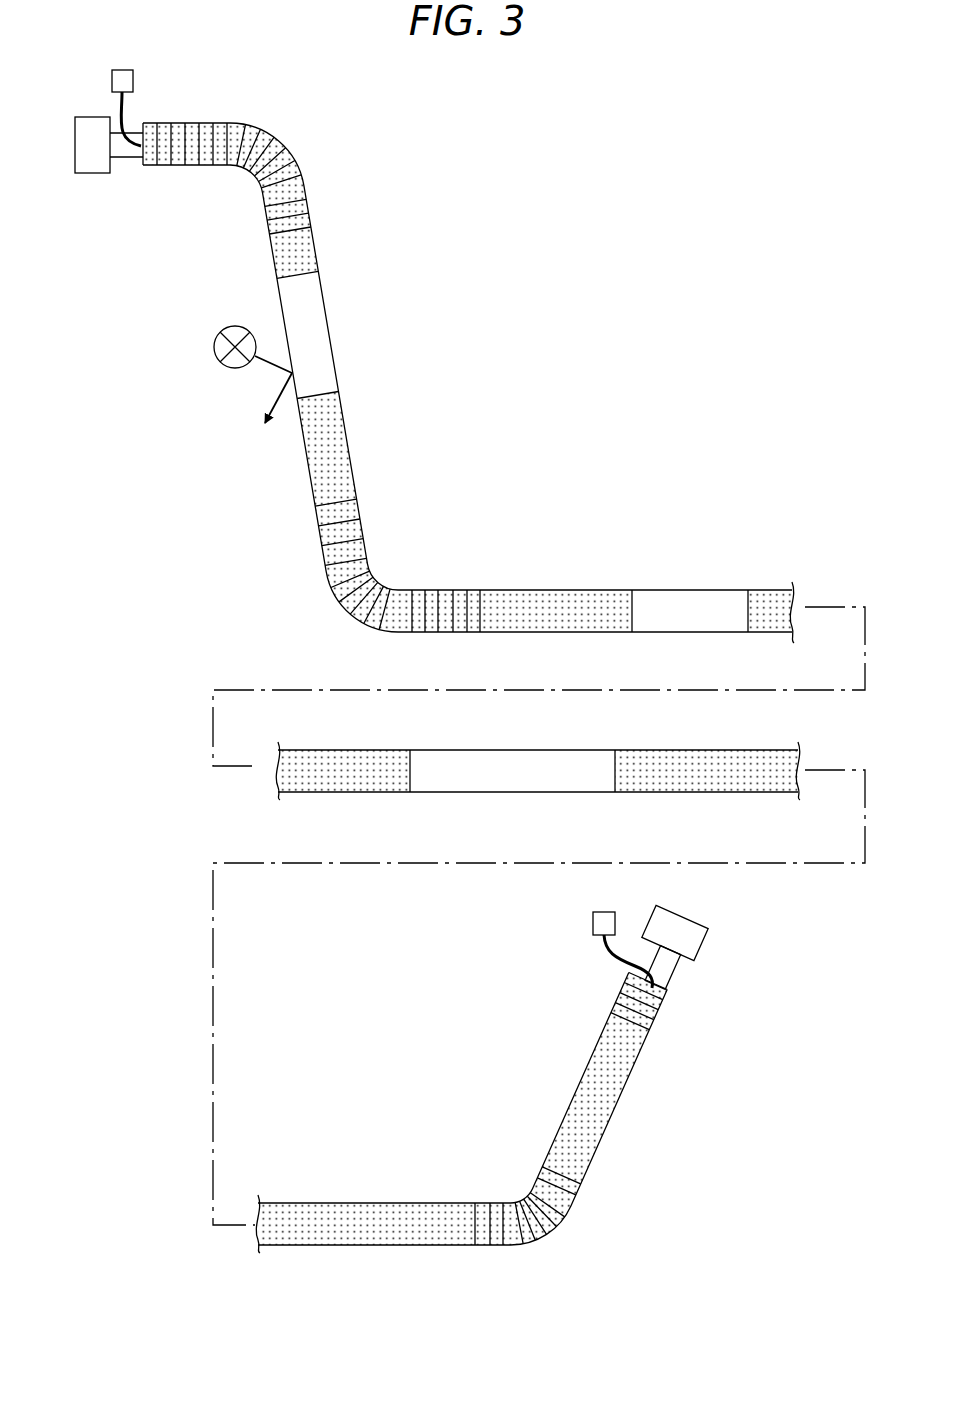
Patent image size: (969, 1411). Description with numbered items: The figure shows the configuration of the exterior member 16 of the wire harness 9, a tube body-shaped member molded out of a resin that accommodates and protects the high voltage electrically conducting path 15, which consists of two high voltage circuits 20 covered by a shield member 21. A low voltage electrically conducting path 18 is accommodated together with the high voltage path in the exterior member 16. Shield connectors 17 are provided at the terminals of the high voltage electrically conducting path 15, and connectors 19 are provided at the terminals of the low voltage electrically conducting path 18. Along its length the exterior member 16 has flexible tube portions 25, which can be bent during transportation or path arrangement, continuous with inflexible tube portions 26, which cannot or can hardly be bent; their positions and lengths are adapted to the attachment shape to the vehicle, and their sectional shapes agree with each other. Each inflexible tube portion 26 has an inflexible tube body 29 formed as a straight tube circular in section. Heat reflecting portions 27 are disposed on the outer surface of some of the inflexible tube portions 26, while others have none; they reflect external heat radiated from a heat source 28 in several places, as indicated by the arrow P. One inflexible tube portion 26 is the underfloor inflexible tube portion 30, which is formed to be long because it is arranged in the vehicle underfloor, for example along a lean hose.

The wire harness 9 is at (530, 427).
The high voltage electrically conducting path 15 is at (675, 970).
The exterior member 16 is at (355, 458).
The shield connector 17 is at (93, 167).
The low voltage electrically conducting path 18 is at (610, 955).
The connector 19 is at (135, 82).
The high voltage circuit 20 is at (122, 150).
The shield member 21 is at (132, 163).
The flexible tube portion 25 is at (267, 140).
The inflexible tube portion 26 is at (320, 240).
The heat reflecting portion 27 is at (283, 298).
The heat source 28 is at (214, 347).
The inflexible tube body 29 is at (273, 258).
The underfloor inflexible tube portion 30 is at (767, 597).
The arrow indicating reflection of external heat P is at (272, 412).